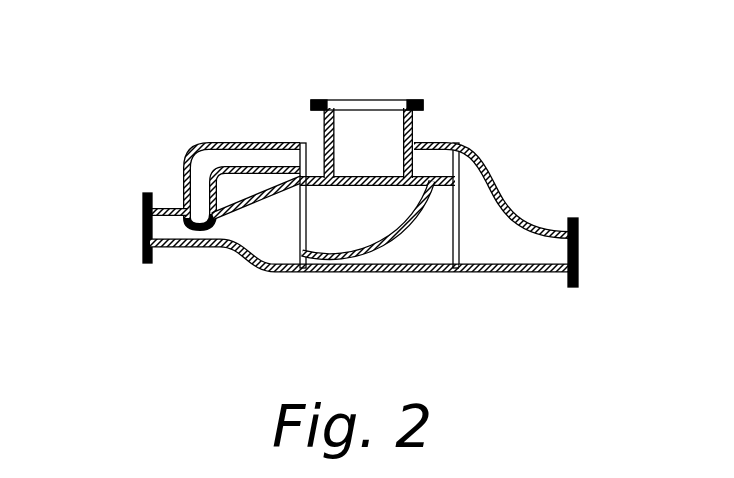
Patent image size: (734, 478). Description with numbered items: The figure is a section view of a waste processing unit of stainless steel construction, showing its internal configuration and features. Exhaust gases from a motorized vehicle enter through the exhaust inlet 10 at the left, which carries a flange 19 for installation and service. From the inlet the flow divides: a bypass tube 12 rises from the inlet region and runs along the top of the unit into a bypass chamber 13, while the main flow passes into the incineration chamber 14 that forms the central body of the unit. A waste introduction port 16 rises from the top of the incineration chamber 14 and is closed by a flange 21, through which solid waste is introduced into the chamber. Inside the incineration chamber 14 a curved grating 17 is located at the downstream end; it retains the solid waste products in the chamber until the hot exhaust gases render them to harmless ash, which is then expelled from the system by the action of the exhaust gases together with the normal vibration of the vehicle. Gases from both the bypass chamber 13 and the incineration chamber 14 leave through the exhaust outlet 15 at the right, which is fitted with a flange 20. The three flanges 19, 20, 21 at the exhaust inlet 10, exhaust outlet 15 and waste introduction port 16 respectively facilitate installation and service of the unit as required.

The exhaust inlet 10 is at (147, 230).
The bypass tube 12 is at (195, 152).
The bypass chamber 13 is at (428, 148).
The incineration chamber 14 is at (343, 220).
The exhaust outlet 15 is at (580, 249).
The waste introduction port 16 is at (365, 120).
The grating 17 is at (410, 237).
The flange 19 is at (143, 262).
The flange 20 is at (577, 228).
The flange 21 is at (427, 99).